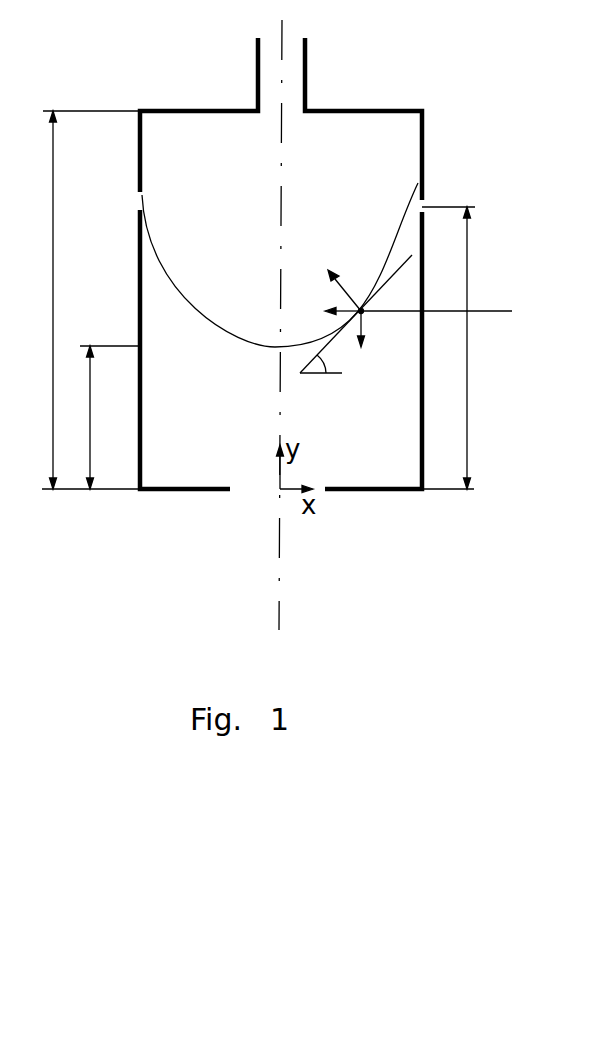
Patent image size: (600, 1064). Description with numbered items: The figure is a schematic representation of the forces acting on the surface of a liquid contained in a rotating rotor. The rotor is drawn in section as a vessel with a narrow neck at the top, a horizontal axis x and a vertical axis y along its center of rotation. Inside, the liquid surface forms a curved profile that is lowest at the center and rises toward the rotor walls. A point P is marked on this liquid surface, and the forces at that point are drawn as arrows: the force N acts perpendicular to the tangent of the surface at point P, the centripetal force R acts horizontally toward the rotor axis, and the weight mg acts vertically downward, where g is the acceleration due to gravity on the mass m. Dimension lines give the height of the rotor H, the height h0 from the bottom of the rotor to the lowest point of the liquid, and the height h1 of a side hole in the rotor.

The height of the rotor H is at (80, 300).
The height from the bottom of the rotor to the lowest point of the liquid h0 is at (100, 417).
The height of a side hole in the rotor h1 is at (448, 348).
The point on the surface of the liquid P is at (446, 312).
The centripetal force R is at (331, 311).
The force perpendicular to the tangent N is at (338, 276).
The gravitational force on mass m mg is at (381, 333).